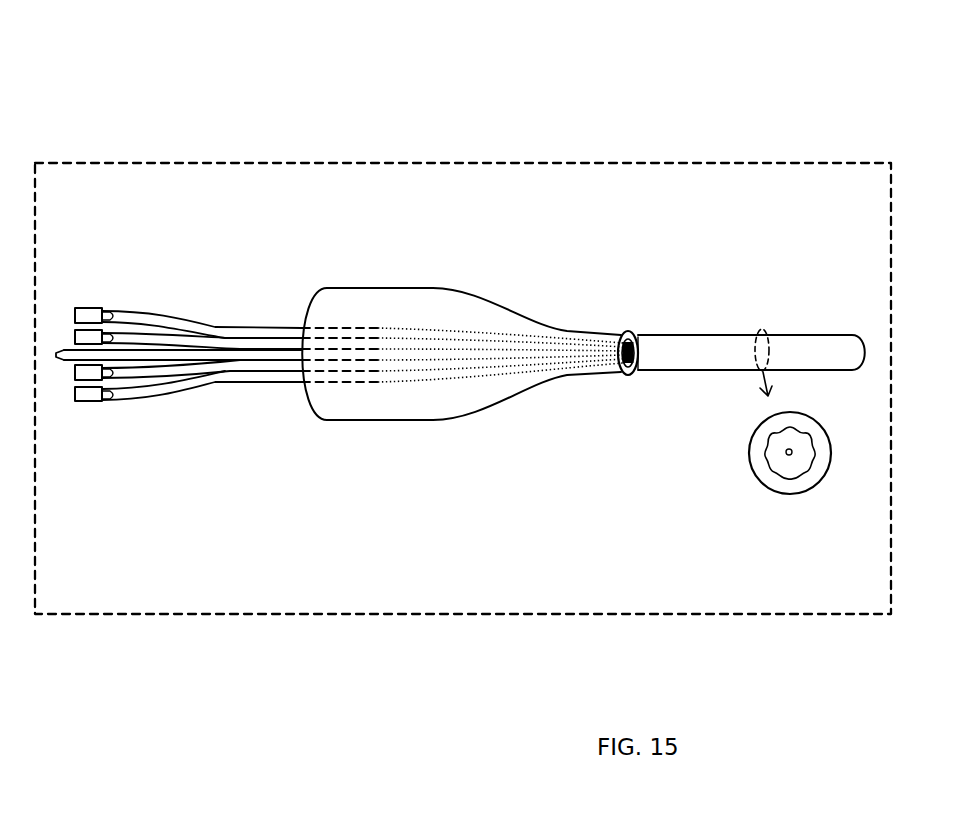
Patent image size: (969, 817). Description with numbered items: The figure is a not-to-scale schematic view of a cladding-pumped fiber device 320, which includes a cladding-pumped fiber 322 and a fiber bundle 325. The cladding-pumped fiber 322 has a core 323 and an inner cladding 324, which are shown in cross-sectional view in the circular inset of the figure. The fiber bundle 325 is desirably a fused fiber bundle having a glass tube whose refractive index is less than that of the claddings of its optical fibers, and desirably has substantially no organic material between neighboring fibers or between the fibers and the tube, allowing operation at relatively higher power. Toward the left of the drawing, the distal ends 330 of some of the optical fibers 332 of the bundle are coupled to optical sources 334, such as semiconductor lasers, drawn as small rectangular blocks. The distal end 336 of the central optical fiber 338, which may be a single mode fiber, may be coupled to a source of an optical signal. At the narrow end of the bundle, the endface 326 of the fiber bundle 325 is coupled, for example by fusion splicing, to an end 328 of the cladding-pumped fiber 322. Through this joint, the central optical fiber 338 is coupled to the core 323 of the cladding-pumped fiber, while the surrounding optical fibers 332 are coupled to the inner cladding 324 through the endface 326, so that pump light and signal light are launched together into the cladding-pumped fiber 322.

The cladding-pumped fiber device 320 is at (272, 102).
The cladding-pumped fiber 322 is at (717, 345).
The core 323 is at (793, 460).
The inner cladding 324 is at (775, 450).
The fiber bundle 325 is at (361, 469).
The endface 326 is at (623, 332).
The end 328 is at (654, 379).
The distal ends 330 is at (108, 337).
The optical fibers 332 is at (165, 340).
The optical sources 334 is at (80, 401).
The distal end 336 is at (57, 354).
The central optical fiber 338 is at (239, 356).